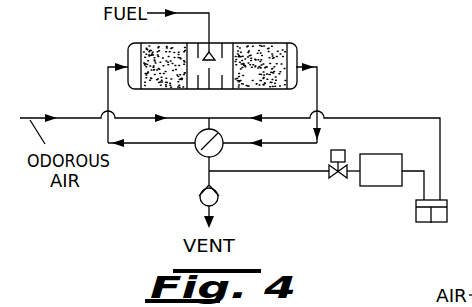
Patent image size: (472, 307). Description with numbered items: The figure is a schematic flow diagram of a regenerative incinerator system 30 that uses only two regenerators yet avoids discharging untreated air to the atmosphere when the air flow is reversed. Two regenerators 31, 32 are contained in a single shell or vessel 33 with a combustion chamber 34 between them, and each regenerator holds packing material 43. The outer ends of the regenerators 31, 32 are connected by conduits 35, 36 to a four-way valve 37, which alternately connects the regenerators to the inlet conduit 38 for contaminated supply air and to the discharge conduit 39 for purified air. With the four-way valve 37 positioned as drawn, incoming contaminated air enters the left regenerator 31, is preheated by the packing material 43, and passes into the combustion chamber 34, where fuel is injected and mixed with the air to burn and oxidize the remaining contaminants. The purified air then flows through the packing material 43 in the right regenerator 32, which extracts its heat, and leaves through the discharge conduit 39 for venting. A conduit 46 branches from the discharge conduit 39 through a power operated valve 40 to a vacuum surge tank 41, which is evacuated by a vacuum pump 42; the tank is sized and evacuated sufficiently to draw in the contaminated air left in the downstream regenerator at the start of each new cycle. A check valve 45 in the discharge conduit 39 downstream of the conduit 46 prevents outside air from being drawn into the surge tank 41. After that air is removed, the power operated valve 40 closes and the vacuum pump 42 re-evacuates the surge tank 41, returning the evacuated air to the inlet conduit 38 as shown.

The regenerative incinerator system 30 is at (308, 47).
The regenerator 31 is at (120, 40).
The regenerator 32 is at (292, 39).
The shell or vessel 33 is at (236, 44).
The combustion chamber 34 is at (213, 89).
The conduit 35 is at (108, 88).
The conduit 36 is at (317, 86).
The four-way valve 37 is at (195, 157).
The inlet conduit 38 is at (70, 117).
The discharge conduit 39 is at (206, 181).
The power operated valve 40 is at (336, 178).
The vacuum surge tank 41 is at (374, 186).
The vacuum pump 42 is at (416, 216).
The packing material 43 is at (158, 48).
The check valve 45 is at (200, 201).
The conduit 46 is at (268, 172).